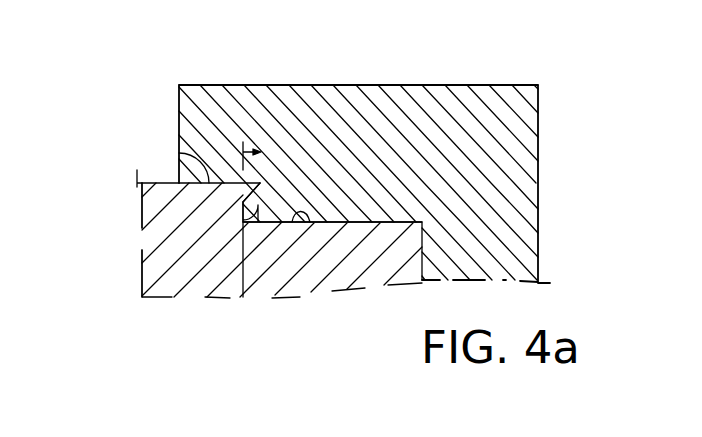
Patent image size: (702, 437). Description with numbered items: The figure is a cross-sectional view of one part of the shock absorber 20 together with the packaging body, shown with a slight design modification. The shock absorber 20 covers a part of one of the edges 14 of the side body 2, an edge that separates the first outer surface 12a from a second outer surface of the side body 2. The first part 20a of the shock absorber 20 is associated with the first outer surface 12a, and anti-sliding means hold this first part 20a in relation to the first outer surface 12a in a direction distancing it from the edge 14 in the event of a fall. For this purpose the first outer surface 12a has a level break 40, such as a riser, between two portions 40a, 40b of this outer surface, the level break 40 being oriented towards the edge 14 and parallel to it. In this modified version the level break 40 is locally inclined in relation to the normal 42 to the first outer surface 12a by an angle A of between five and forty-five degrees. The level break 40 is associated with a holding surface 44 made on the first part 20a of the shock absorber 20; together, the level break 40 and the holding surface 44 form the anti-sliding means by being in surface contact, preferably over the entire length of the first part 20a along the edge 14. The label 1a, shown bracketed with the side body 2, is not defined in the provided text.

The shock absorber 20 is at (331, 72).
The first part of the shock absorber 20a is at (234, 105).
The portion of the first outer surface 40a is at (179, 155).
The first outer surface 12a is at (150, 168).
The angle A is at (262, 152).
The level break 40 is at (258, 189).
The holding surface 44 is at (260, 186).
The edge 14 is at (422, 222).
The assembly 1a is at (136, 253).
The side body 2 is at (256, 240).
The normal 42 is at (244, 276).
The portion of the first outer surface 40b is at (309, 223).